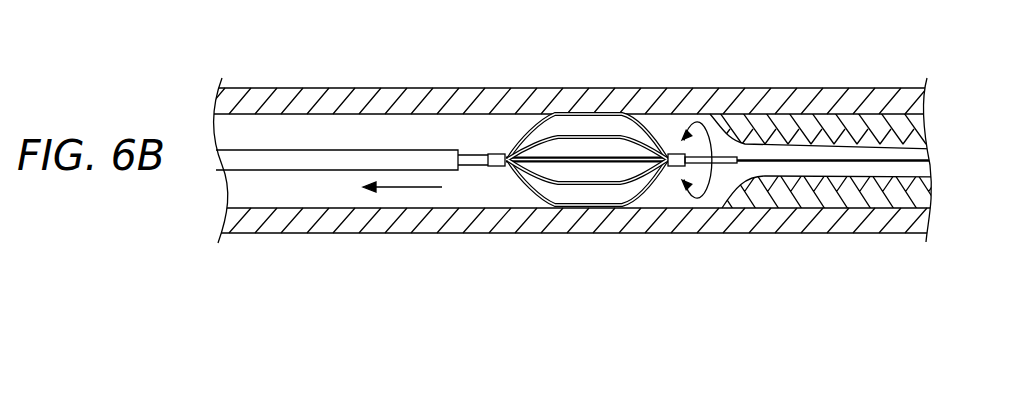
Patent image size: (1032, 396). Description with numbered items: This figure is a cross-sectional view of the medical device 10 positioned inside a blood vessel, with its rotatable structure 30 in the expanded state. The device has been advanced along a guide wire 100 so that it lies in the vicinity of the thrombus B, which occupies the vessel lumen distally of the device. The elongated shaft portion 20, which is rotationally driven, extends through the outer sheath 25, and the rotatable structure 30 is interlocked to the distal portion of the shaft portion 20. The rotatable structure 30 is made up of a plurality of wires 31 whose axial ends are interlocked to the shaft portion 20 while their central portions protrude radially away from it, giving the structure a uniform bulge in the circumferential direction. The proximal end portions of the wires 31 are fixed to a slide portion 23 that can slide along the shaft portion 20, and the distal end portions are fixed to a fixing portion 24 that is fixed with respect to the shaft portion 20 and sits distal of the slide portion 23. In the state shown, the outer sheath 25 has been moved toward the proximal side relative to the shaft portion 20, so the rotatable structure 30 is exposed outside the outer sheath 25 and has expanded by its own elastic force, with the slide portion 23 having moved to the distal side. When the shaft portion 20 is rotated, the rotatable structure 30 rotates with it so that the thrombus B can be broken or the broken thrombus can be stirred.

The medical device 10 is at (698, 165).
The shaft portion 20 is at (468, 163).
The slide portion 23 is at (503, 166).
The fixing portion 24 is at (678, 166).
The outer sheath 25 is at (270, 160).
The rotatable structure 30 is at (587, 109).
The wires 31 is at (597, 135).
The guide wire 100 is at (785, 163).
The thrombus B is at (840, 198).